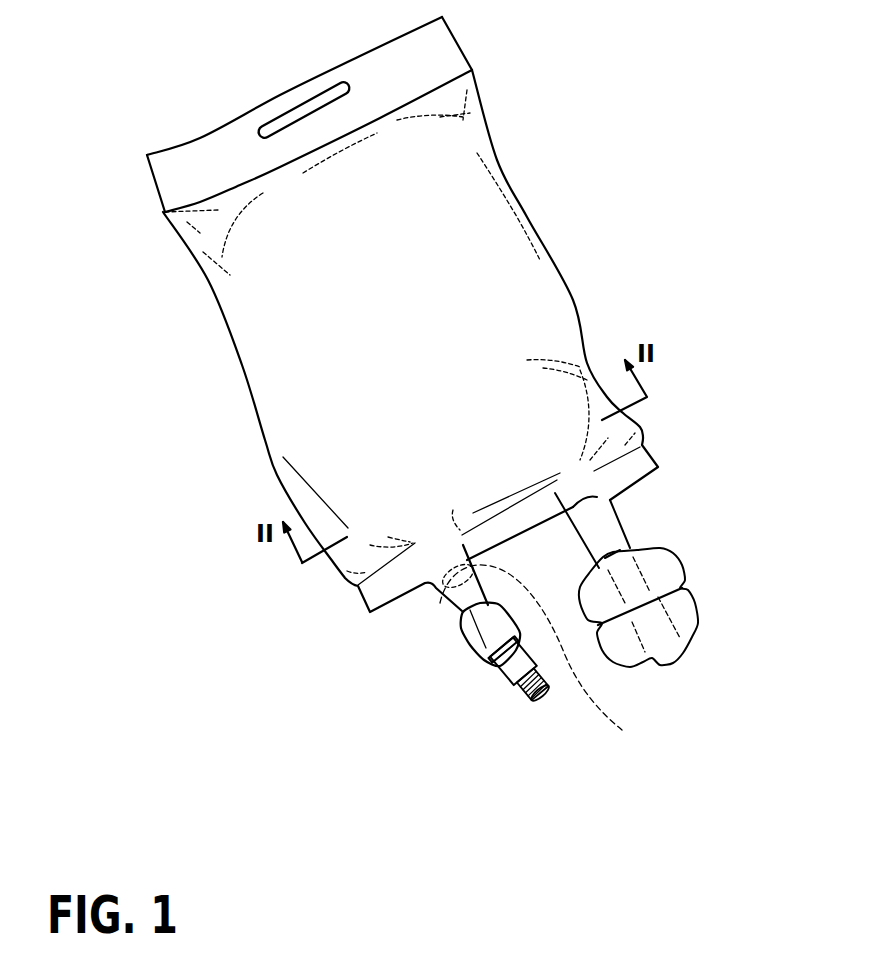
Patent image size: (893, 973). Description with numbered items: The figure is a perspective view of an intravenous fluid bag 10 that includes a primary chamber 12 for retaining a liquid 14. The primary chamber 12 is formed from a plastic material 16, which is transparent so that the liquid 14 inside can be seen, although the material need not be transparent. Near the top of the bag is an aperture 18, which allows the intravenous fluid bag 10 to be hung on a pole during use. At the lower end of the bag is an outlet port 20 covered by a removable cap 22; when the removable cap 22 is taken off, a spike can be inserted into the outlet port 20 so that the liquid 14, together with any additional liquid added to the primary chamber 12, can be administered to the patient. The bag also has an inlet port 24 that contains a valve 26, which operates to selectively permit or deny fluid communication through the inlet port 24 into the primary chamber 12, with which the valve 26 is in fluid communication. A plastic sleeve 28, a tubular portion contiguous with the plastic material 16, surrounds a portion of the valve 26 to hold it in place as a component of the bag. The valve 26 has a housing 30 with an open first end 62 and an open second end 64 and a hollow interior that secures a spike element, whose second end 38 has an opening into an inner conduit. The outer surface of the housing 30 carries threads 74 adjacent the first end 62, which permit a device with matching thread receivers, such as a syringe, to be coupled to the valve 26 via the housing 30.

The intravenous fluid bag 10 is at (150, 93).
The primary chamber 12 is at (342, 442).
The liquid 14 is at (328, 350).
The plastic material 16 is at (500, 243).
The aperture 18 is at (297, 107).
The outlet port 20 is at (627, 548).
The removable cap 22 is at (685, 613).
The inlet port 24 is at (430, 588).
The valve 26 is at (483, 650).
The plastic sleeve 28 is at (448, 595).
The housing 30 is at (487, 662).
The second end 38 is at (544, 655).
The first end 62 is at (531, 673).
The second end 64 is at (467, 648).
The threads 74 is at (521, 690).